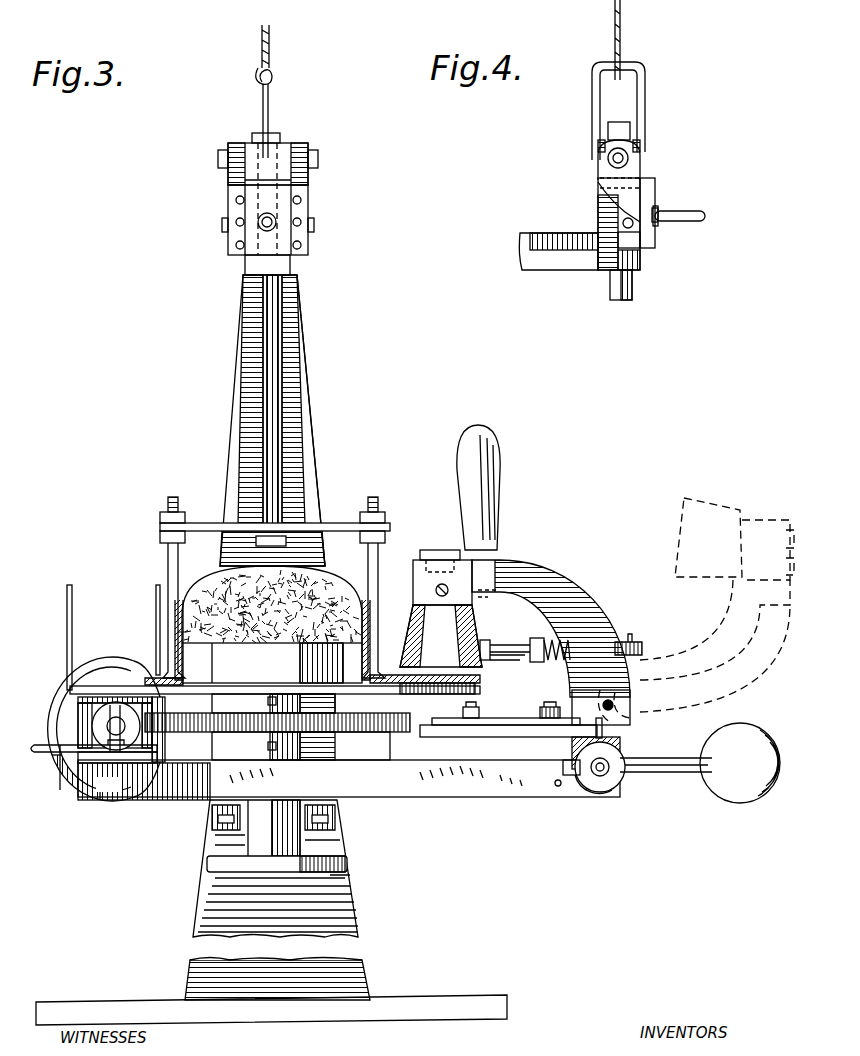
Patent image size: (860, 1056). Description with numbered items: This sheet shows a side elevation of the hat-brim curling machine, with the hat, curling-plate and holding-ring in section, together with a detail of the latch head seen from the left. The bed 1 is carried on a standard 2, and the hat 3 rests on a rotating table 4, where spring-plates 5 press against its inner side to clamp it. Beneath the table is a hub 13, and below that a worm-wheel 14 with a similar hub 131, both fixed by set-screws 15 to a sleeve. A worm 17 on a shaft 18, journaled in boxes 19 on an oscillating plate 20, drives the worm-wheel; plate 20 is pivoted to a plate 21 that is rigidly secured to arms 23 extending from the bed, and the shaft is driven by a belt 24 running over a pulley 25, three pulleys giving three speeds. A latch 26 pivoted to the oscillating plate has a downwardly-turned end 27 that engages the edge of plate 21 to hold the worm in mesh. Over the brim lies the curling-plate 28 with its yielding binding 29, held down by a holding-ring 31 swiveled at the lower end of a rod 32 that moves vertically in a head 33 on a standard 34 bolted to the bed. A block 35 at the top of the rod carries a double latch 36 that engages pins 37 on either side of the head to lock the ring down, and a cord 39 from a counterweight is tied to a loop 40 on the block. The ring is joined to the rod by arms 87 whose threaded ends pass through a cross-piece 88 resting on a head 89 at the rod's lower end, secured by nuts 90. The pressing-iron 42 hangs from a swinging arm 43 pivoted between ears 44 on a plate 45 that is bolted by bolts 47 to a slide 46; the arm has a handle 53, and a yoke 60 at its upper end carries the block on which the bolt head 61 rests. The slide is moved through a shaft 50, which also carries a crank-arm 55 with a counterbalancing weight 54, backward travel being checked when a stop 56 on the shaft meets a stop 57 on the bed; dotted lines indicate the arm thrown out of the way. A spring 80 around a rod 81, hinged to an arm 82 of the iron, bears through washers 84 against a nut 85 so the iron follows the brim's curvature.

In FIG. 3, the bed 1 is at (421, 797).
In FIG. 3, the standard 2 is at (358, 892).
In FIG. 3, the hat 3 is at (270, 605).
In FIG. 3, the rotating table 4 is at (480, 686).
In FIG. 3, the spring-plates 5 is at (272, 663).
In FIG. 3, the hub 13 is at (337, 703).
In FIG. 3, the hub of worm-wheel 131 is at (340, 750).
In FIG. 3, the worm-wheel 14 is at (398, 722).
In FIG. 3, the set-screws 15 is at (272, 752).
In FIG. 3, the worm 17 is at (115, 726).
In FIG. 3, the shaft 18 is at (118, 726).
In FIG. 3, the boxes 19 is at (78, 710).
In FIG. 3, the oscillating plate 20 is at (78, 760).
In FIG. 3, the plate 21 is at (60, 790).
In FIG. 3, the arms 23 is at (144, 781).
In FIG. 3, the belt 24 is at (72, 622).
In FIG. 3, the pulley 25 is at (124, 664).
In FIG. 3, the latch 26 is at (34, 748).
In FIG. 3, the downwardly-turned end 27 is at (150, 762).
In FIG. 3, the curling-plate 28 is at (378, 674).
In FIG. 3, the yielding binding 29 is at (150, 678).
In FIG. 3, the holding-ring 31 is at (376, 646).
In FIG. 3, the rod 32 is at (300, 382).
In FIG. 4, the rod 32 is at (610, 290).
In FIG. 3, the head 33 is at (298, 266).
In FIG. 4, the head 33 is at (604, 218).
In FIG. 3, the standard 34 is at (318, 455).
In FIG. 3, the block 35 is at (290, 146).
In FIG. 4, the block 35 is at (600, 146).
In FIG. 3, the double latch 36 is at (312, 207).
In FIG. 4, the double latch 36 is at (642, 256).
In FIG. 3, the pins 37 is at (222, 232).
In FIG. 4, the pins 37 is at (642, 232).
In FIG. 3, the cord 39 is at (275, 60).
In FIG. 4, the cord 39 is at (622, 56).
In FIG. 3, the loop 40 is at (262, 107).
In FIG. 4, the loop 40 is at (646, 110).
In FIG. 3, the pressing-iron 42 is at (441, 636).
In FIG. 3, the swinging arm 43 is at (547, 578).
In FIG. 3, the ears 44 is at (632, 700).
In FIG. 3, the plate 45 is at (517, 720).
In FIG. 3, the slide 46 is at (562, 750).
In FIG. 3, the bolts 47 is at (468, 716).
In FIG. 3, the shaft 50 is at (600, 780).
In FIG. 3, the handle 53 is at (503, 482).
In FIG. 3, the weight 54 is at (740, 763).
In FIG. 3, the crank-arm 55 is at (672, 772).
In FIG. 3, the stop 56 is at (605, 722).
In FIG. 3, the stop 57 is at (556, 786).
In FIG. 3, the yoke 60 is at (415, 588).
In FIG. 3, the head 61 is at (437, 556).
In FIG. 3, the spring 80 is at (586, 649).
In FIG. 3, the rod 81 is at (506, 650).
In FIG. 3, the arm 82 is at (485, 646).
In FIG. 3, the washers 84 is at (545, 644).
In FIG. 3, the nut 85 is at (532, 662).
In FIG. 3, the arms 87 is at (168, 557).
In FIG. 3, the cross-piece 88 is at (312, 522).
In FIG. 3, the head 89 is at (268, 546).
In FIG. 3, the nuts 90 is at (386, 515).